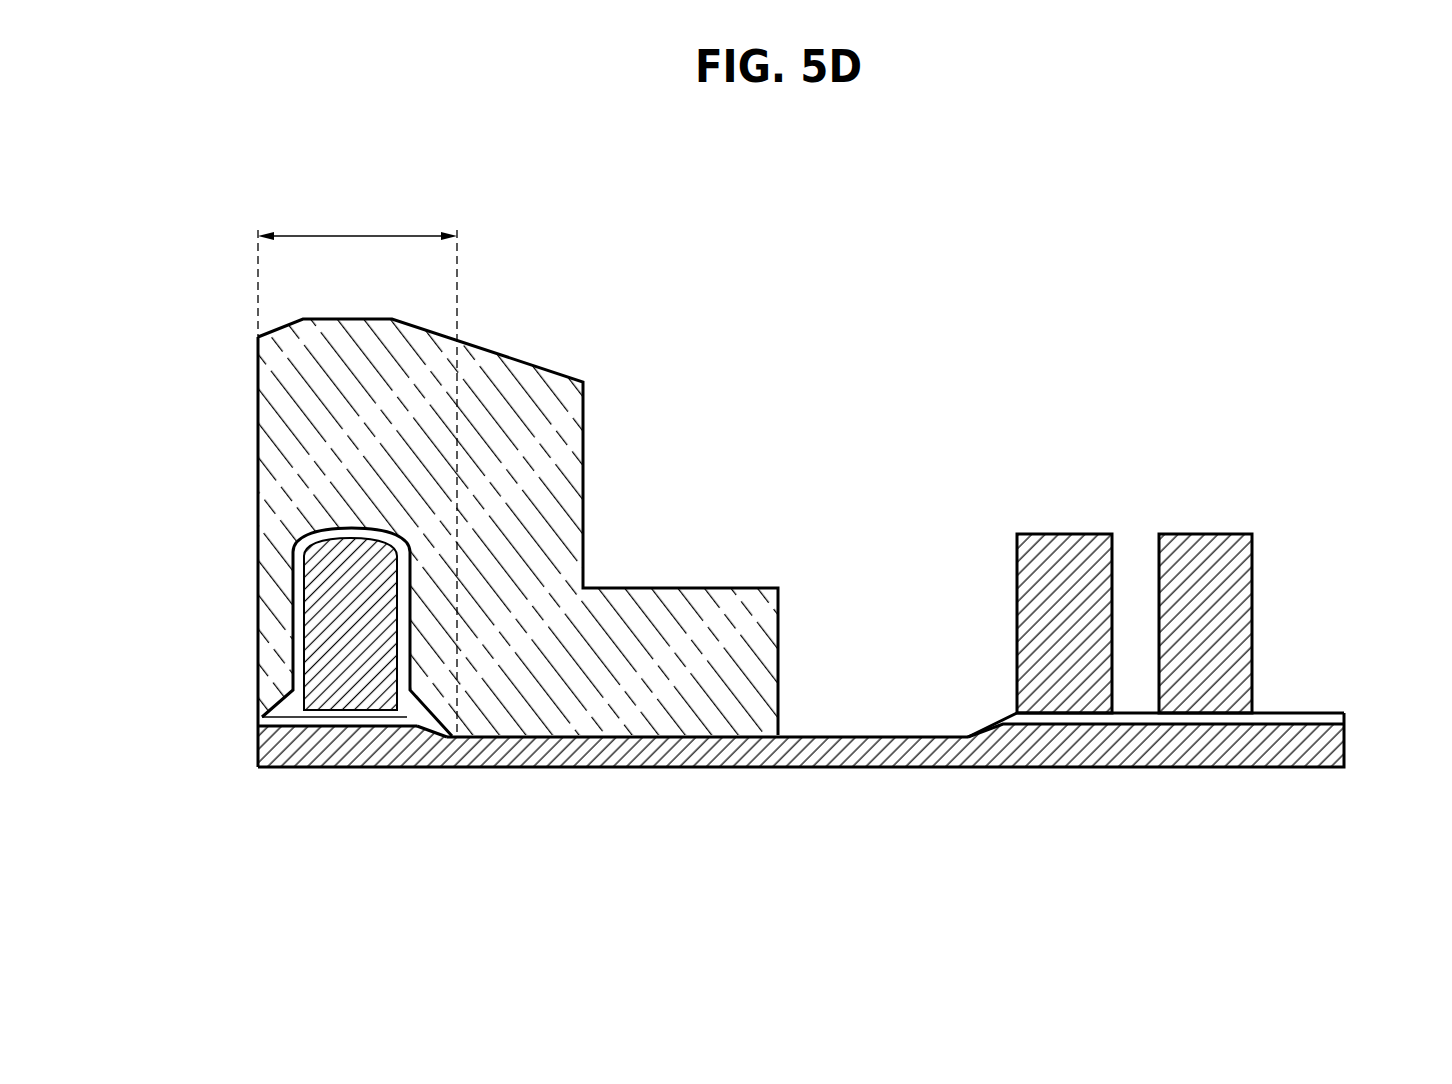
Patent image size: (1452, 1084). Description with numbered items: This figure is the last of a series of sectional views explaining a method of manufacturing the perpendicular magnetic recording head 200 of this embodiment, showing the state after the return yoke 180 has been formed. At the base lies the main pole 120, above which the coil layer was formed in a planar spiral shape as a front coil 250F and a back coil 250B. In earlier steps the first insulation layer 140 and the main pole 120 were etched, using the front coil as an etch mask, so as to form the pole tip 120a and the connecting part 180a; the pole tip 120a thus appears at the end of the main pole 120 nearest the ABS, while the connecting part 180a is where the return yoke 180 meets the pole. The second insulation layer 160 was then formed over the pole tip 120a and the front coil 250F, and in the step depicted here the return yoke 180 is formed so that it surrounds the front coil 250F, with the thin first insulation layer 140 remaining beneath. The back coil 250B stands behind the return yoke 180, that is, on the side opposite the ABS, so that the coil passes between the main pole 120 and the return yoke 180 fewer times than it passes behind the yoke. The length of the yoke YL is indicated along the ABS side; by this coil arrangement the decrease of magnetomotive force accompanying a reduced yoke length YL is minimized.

The main pole 120 is at (1335, 743).
The pole tip 120a is at (277, 752).
The first insulation layer 140 is at (296, 718).
The second insulation layer 160 is at (293, 652).
The return yoke 180 is at (560, 527).
The connecting part 180a is at (740, 735).
The perpendicular magnetic recording head 200 is at (1215, 369).
The front coil 250F is at (290, 588).
The back coil 250B is at (1270, 607).
The air bearing surface ABS is at (258, 267).
The length of the yoke YL is at (357, 471).